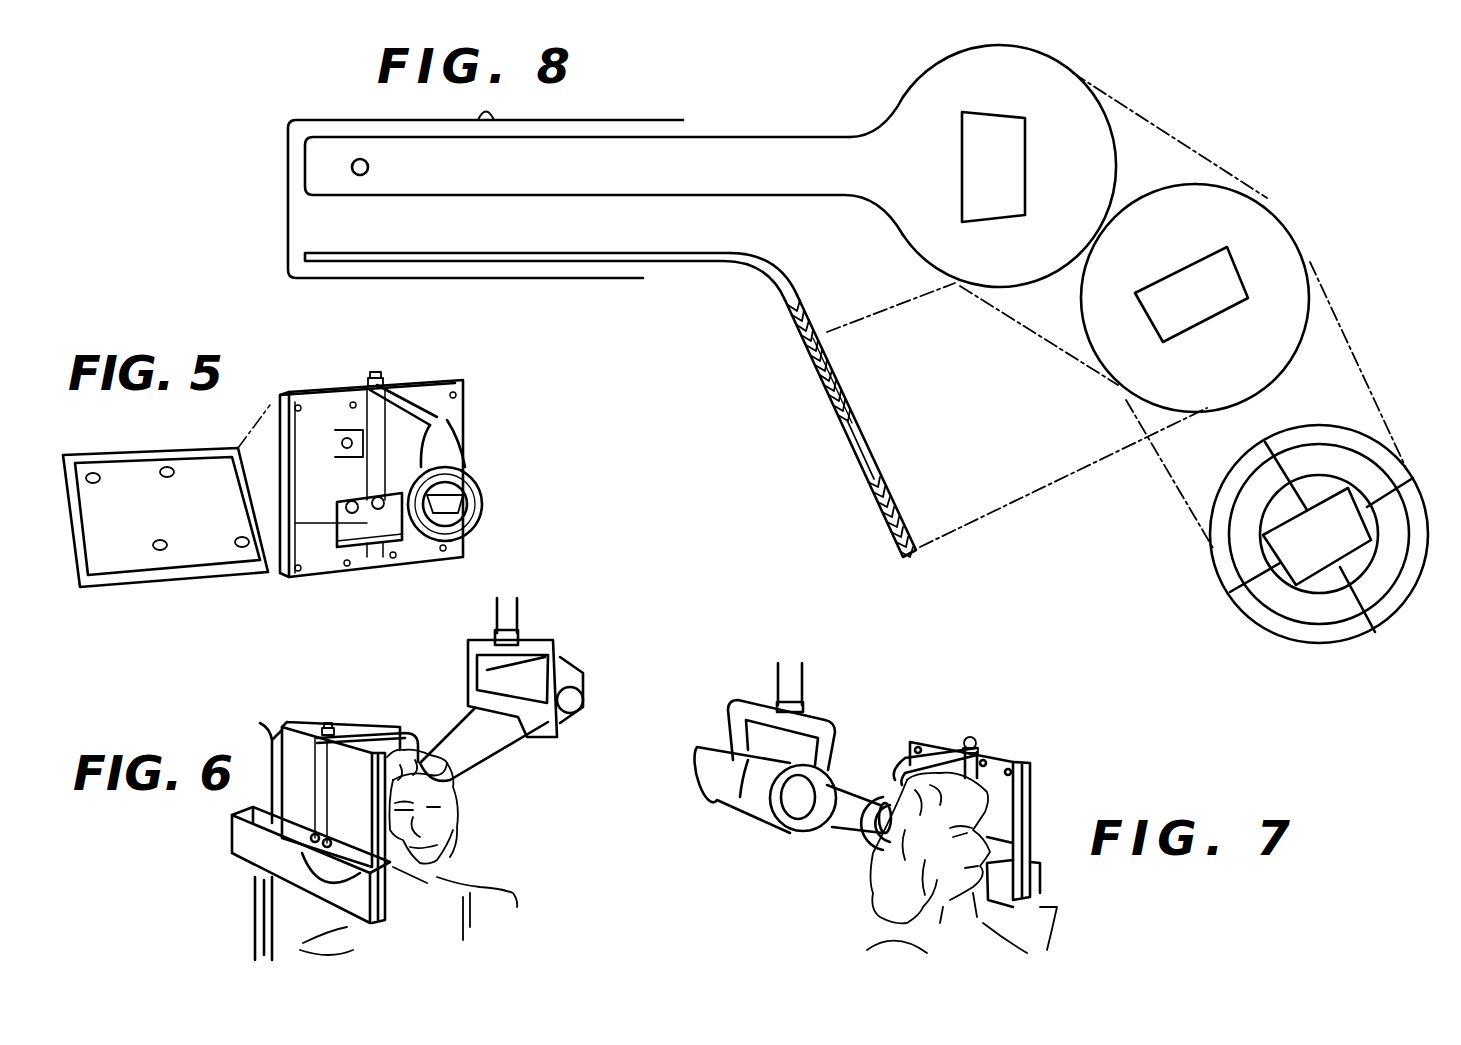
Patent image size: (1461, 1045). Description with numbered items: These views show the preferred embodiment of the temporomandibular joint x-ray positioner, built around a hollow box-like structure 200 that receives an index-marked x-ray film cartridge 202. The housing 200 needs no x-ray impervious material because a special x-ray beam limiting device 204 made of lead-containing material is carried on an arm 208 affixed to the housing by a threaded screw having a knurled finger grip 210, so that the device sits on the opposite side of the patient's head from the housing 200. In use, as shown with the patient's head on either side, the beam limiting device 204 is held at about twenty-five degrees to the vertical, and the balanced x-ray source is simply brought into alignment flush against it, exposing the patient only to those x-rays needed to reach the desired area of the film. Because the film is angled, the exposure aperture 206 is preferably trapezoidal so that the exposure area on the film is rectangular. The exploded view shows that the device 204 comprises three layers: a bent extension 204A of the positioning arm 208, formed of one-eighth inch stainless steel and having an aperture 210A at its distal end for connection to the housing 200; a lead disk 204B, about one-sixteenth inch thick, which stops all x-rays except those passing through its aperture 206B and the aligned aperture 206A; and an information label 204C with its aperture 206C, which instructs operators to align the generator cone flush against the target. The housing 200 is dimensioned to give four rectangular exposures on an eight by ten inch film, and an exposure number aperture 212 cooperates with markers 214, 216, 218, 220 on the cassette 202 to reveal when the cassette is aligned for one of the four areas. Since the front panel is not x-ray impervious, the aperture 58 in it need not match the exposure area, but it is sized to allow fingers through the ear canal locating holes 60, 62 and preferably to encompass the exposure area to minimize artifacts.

In FIG. 5, the aperture 58 is at (370, 535).
In FIG. 5, the ear canal locating hole 60 is at (348, 502).
In FIG. 5, the ear canal locating hole 62 is at (383, 498).
In FIG. 5, the hollow box-like structure 200 is at (331, 369).
In FIG. 6, the hollow box-like structure 200 is at (317, 704).
In FIG. 7, the hollow box-like structure 200 is at (967, 725).
In FIG. 5, the x-ray film cartridge 202 is at (122, 445).
In FIG. 6, the x-ray film cartridge 202 is at (254, 758).
In FIG. 8, the x-ray beam limiting device 204 is at (848, 350).
In FIG. 5, the x-ray beam limiting device 204 is at (468, 477).
In FIG. 6, the x-ray beam limiting device 204 is at (457, 790).
In FIG. 7, the x-ray beam limiting device 204 is at (868, 848).
In FIG. 8, the bent extension of the positioning arm 204A is at (942, 63).
In FIG. 8, the x-ray impervious member 204B is at (1273, 215).
In FIG. 8, the information label 204C is at (1394, 461).
In FIG. 8, the exposure aperture 206 is at (890, 468).
In FIG. 5, the exposure aperture 206 is at (455, 503).
In FIG. 8, the aperture 206A is at (962, 218).
In FIG. 8, the aperture 206B is at (1157, 340).
In FIG. 8, the aperture of ring 204C 206C is at (1242, 617).
In FIG. 8, the positioning arm 208 is at (667, 142).
In FIG. 5, the positioning arm 208 is at (437, 417).
In FIG. 6, the positioning arm 208 is at (413, 723).
In FIG. 7, the positioning arm 208 is at (940, 747).
In FIG. 5, the threaded screw having a knurled finger grip 210 is at (383, 365).
In FIG. 6, the threaded screw having a knurled finger grip 210 is at (332, 722).
In FIG. 7, the threaded screw having a knurled finger grip 210 is at (977, 745).
In FIG. 8, the aperture 210A is at (368, 165).
In FIG. 5, the exposure number aperture 212 is at (335, 445).
In FIG. 5, the marker 214 is at (100, 478).
In FIG. 5, the marker 216 is at (172, 467).
In FIG. 5, the marker 218 is at (160, 550).
In FIG. 5, the marker 220 is at (245, 548).